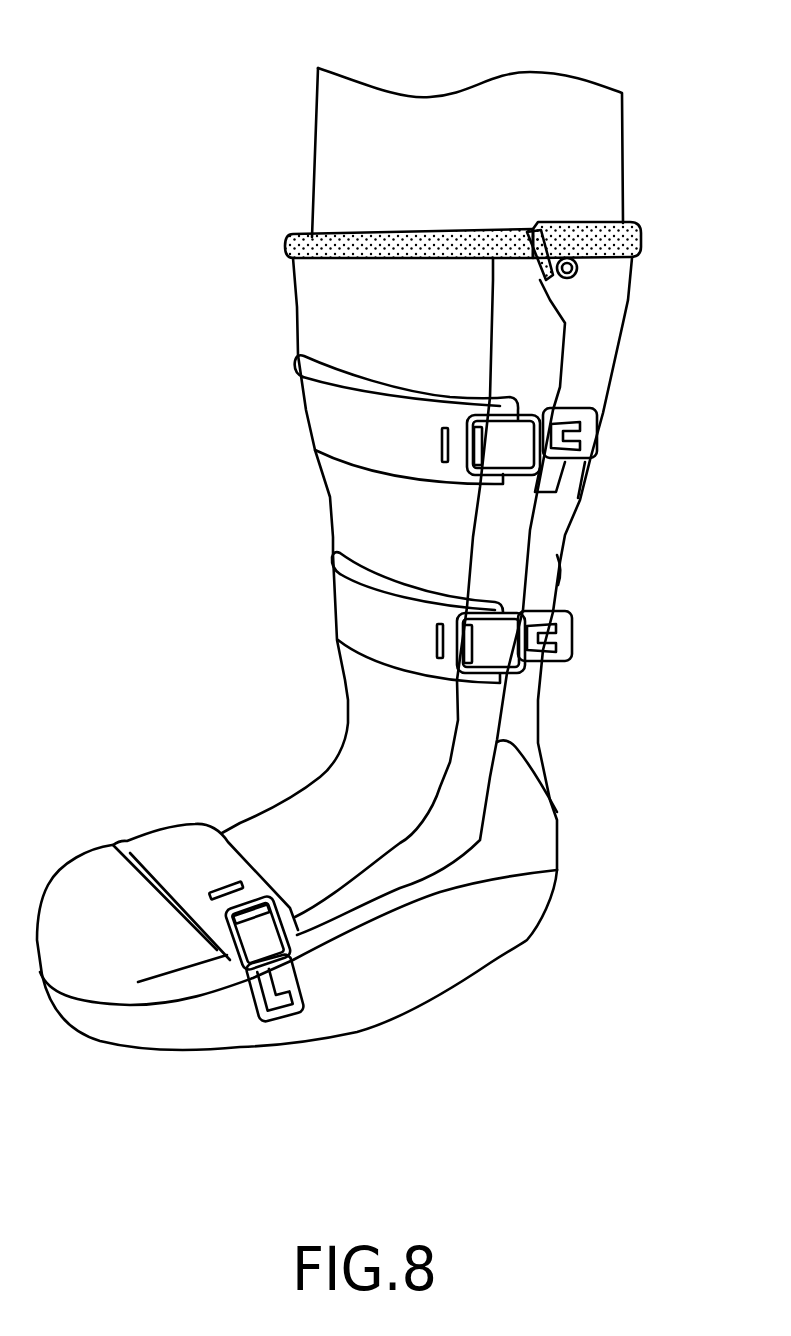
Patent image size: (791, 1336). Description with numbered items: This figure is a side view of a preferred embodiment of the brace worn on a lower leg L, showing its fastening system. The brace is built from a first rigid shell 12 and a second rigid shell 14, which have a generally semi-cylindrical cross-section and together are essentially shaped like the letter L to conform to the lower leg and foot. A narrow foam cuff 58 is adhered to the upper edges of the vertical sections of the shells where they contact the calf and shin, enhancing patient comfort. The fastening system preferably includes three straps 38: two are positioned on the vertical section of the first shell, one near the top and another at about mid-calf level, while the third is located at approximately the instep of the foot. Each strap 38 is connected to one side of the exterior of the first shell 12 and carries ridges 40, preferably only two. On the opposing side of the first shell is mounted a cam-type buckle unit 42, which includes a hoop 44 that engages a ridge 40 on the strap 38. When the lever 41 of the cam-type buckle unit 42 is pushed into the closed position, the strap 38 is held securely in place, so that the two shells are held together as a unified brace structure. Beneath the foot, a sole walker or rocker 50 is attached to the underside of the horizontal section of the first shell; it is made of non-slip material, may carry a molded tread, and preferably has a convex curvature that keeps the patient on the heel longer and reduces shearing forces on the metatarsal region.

The leg L is at (553, 76).
The first rigid shell 12 is at (399, 651).
The second rigid shell 14 is at (293, 308).
The narrow foam cuff 58 is at (290, 238).
The strap 38 is at (358, 420).
The ridge 40 is at (438, 452).
The lever 41 is at (587, 400).
The cam-type buckle unit 42 is at (600, 438).
The hoop 44 is at (540, 483).
The sole walker 50 is at (527, 938).